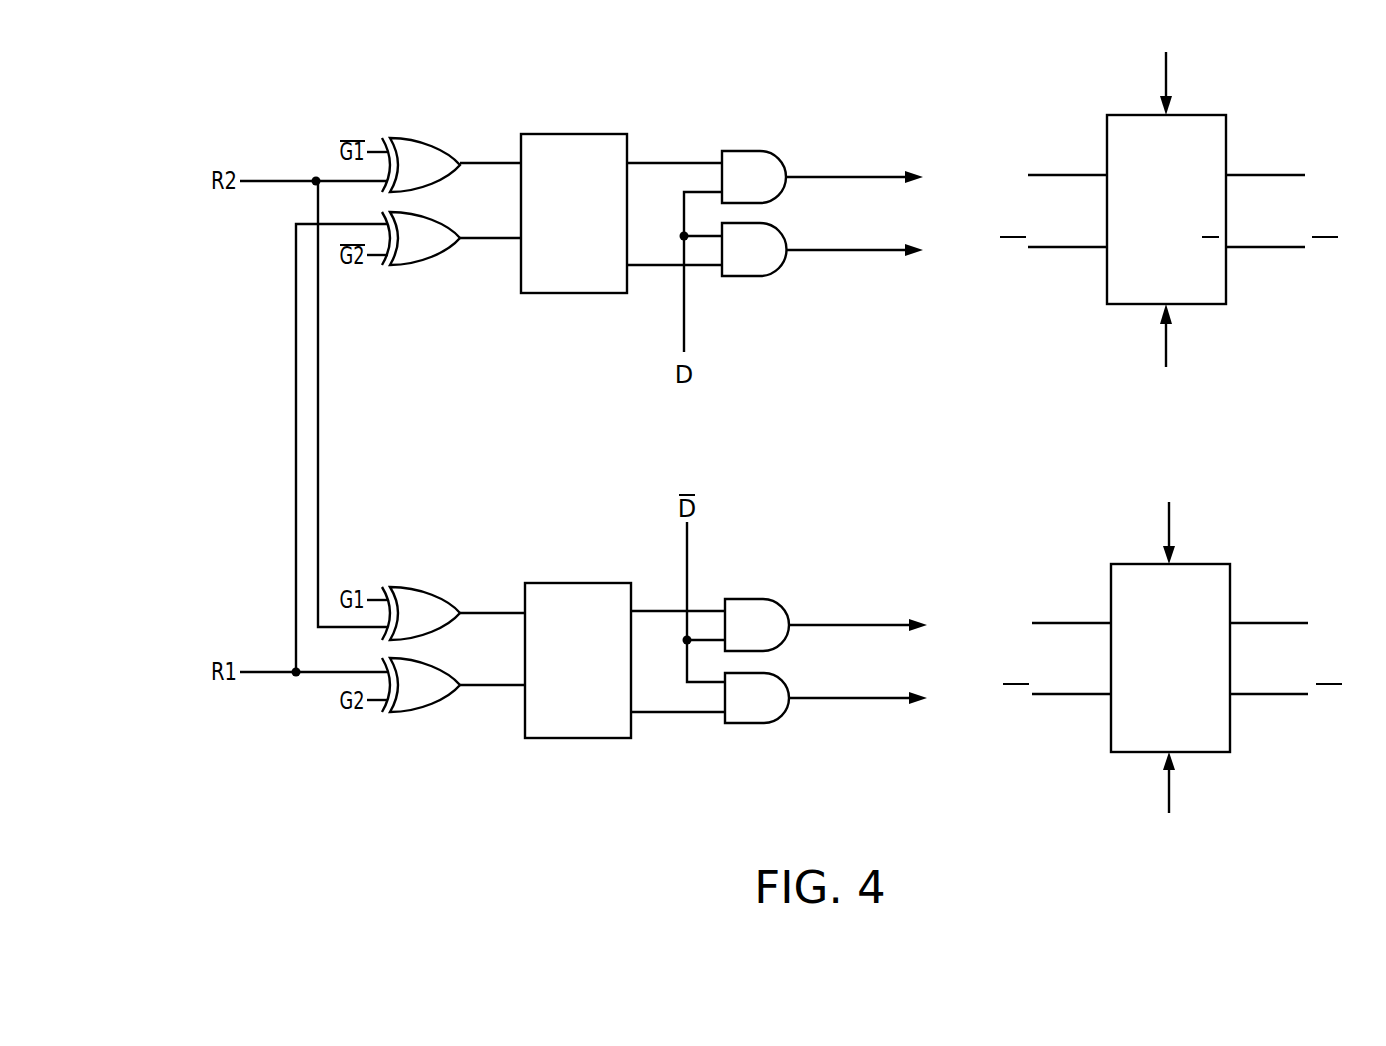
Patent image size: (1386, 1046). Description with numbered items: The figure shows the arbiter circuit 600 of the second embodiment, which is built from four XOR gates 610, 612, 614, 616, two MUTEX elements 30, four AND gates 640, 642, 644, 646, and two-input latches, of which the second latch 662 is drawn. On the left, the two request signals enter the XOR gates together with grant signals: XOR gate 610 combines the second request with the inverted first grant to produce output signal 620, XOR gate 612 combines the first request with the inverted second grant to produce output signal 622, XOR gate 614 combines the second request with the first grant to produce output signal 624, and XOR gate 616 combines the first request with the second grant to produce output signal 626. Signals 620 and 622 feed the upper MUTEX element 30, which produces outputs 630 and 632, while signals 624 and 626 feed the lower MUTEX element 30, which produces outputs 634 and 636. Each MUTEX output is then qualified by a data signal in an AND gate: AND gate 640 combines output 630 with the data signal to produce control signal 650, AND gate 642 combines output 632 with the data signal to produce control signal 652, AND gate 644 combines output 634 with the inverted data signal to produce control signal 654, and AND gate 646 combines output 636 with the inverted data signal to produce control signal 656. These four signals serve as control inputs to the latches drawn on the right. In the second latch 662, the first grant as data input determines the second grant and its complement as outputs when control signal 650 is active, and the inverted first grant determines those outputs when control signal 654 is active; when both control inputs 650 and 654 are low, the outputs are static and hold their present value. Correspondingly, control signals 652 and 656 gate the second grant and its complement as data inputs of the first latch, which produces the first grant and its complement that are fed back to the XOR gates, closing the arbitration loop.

The arbiter circuit 600 is at (352, 760).
The XOR gate 610 is at (402, 178).
The XOR gate 612 is at (402, 251).
The XOR gate 614 is at (404, 626).
The XOR gate 616 is at (404, 698).
The XOR gate output signal 620 is at (477, 162).
The XOR gate output signal 622 is at (477, 241).
The XOR gate output signal 624 is at (482, 611).
The XOR gate output signal 626 is at (481, 688).
The MUTEX element 30 is at (597, 692).
The MUTEX output signal 630 is at (640, 160).
The MUTEX output signal 632 is at (639, 269).
The MUTEX output signal 634 is at (643, 609).
The MUTEX output signal 636 is at (643, 716).
The AND gate 640 is at (730, 191).
The AND gate 642 is at (730, 265).
The AND gate 644 is at (734, 638).
The AND gate 646 is at (734, 711).
The AND gate output signal 650 is at (839, 174).
The AND gate output signal 652 is at (839, 248).
The AND gate output signal 654 is at (844, 624).
The AND gate output signal 656 is at (844, 696).
The second latch 662 is at (1147, 220).